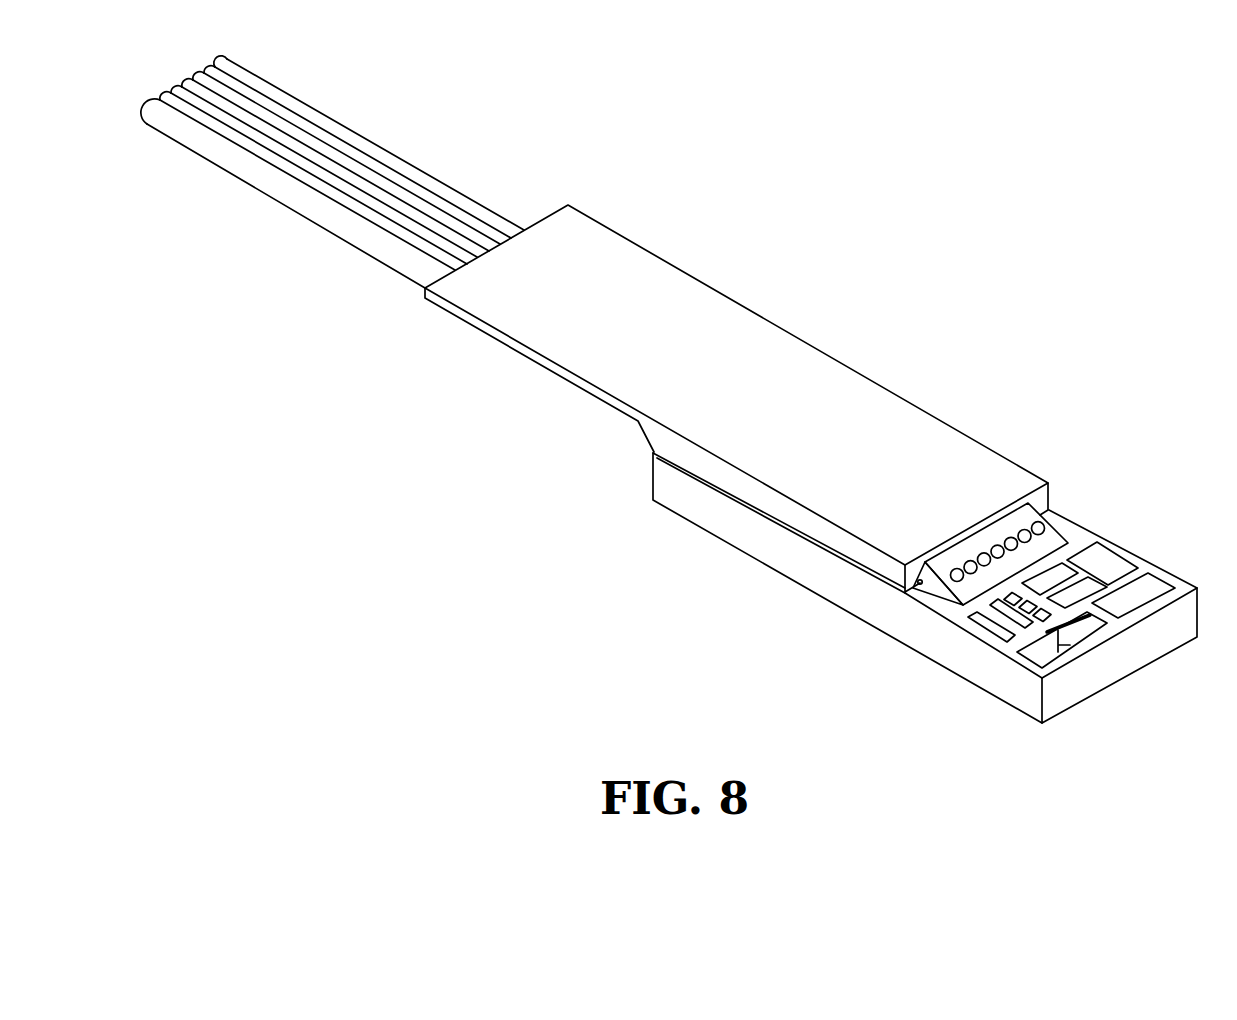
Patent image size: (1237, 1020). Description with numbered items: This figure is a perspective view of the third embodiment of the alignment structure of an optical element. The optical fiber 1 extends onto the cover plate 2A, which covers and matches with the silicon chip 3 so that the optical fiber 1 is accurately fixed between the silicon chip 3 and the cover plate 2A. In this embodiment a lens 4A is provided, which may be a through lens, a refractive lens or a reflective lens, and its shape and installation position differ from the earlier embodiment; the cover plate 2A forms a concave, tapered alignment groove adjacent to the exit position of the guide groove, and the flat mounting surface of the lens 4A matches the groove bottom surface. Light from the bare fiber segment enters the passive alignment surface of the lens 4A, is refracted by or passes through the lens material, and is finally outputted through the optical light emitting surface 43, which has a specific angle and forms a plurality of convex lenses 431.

The optical fiber 1 is at (388, 145).
The cover plate 2A is at (753, 334).
The silicon chip 3 is at (1127, 658).
The lens 4A is at (995, 539).
The optical light emitting surface 43 is at (1052, 540).
The convex lenses 431 is at (1013, 538).